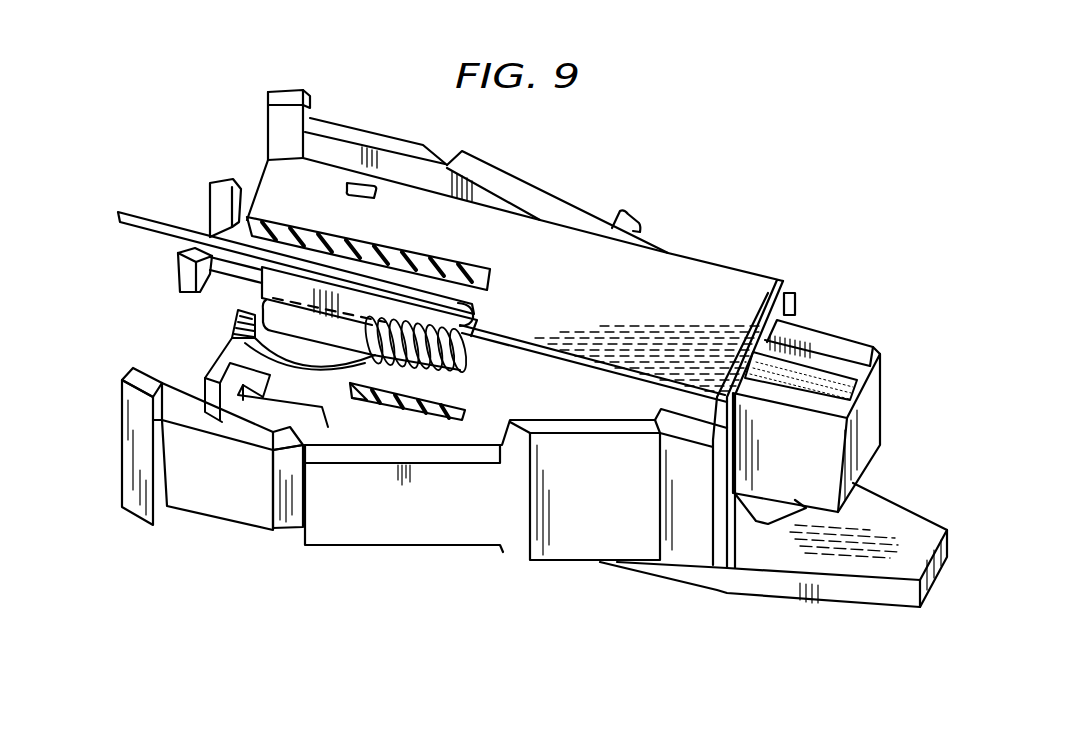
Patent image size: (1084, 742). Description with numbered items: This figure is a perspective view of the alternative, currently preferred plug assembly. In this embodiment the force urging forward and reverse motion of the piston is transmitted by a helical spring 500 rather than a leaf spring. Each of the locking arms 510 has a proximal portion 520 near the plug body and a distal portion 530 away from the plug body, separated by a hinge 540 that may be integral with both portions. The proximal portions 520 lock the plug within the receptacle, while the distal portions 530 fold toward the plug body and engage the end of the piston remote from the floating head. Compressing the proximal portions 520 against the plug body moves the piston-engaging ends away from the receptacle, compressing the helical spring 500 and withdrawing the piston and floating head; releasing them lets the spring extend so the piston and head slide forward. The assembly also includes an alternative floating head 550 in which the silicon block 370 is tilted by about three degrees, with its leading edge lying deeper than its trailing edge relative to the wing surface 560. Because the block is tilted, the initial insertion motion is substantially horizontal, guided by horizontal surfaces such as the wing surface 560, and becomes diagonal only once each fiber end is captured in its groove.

The silicon block 370 is at (848, 368).
The helical spring 500 is at (235, 338).
The locking arm 510 is at (662, 690).
The proximal portion of locking arm 520 is at (463, 530).
The distal portion of locking arm 530 is at (207, 502).
The hinge 540 is at (287, 523).
The floating head 550 is at (865, 427).
The wing surface 560 is at (838, 342).